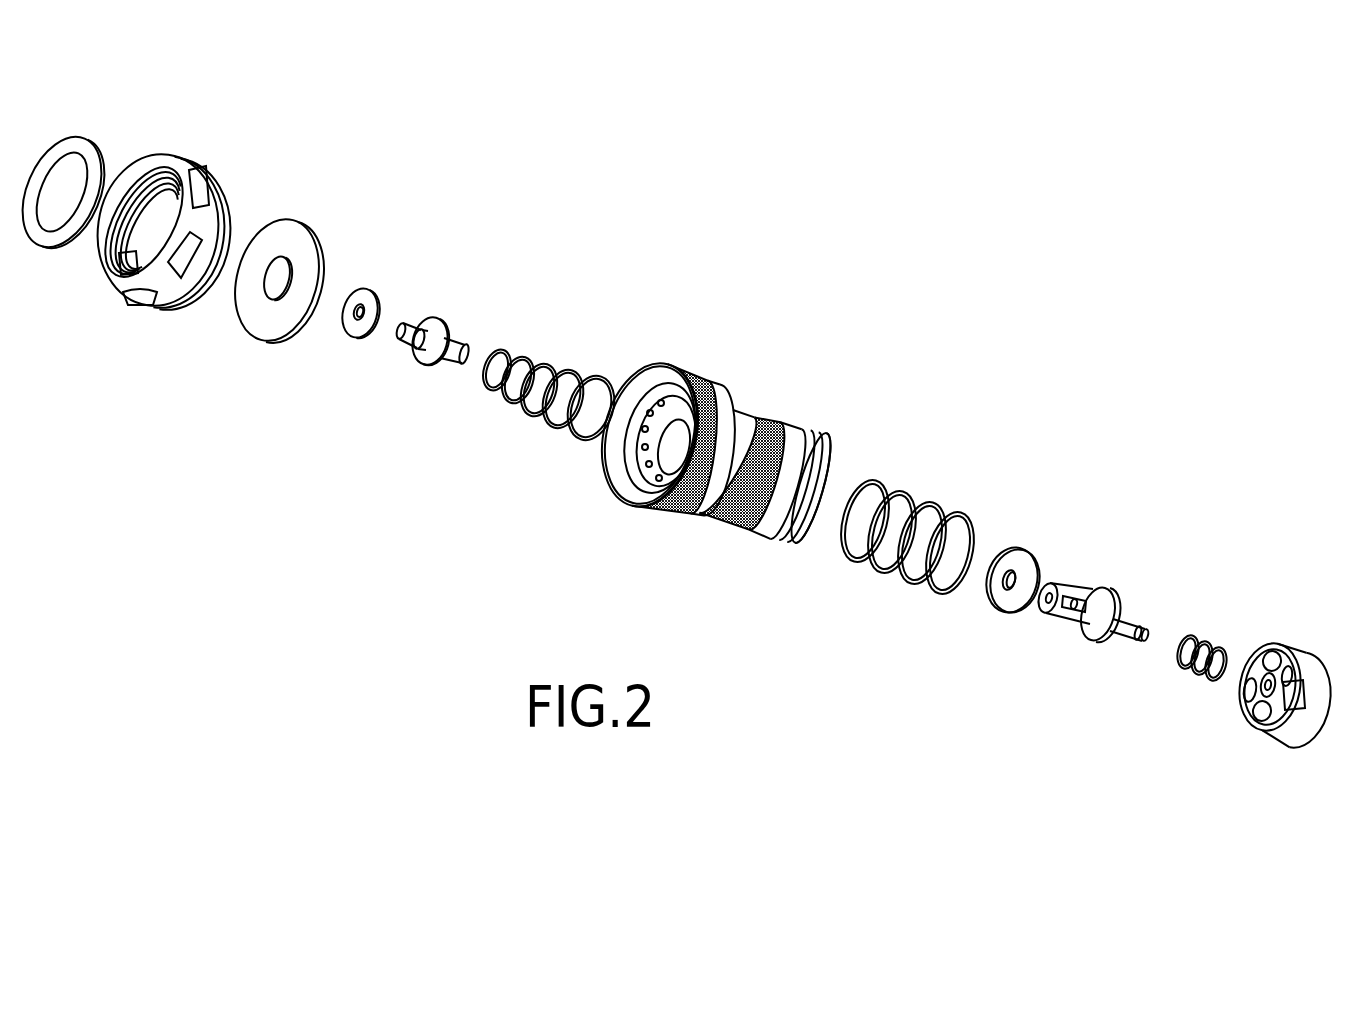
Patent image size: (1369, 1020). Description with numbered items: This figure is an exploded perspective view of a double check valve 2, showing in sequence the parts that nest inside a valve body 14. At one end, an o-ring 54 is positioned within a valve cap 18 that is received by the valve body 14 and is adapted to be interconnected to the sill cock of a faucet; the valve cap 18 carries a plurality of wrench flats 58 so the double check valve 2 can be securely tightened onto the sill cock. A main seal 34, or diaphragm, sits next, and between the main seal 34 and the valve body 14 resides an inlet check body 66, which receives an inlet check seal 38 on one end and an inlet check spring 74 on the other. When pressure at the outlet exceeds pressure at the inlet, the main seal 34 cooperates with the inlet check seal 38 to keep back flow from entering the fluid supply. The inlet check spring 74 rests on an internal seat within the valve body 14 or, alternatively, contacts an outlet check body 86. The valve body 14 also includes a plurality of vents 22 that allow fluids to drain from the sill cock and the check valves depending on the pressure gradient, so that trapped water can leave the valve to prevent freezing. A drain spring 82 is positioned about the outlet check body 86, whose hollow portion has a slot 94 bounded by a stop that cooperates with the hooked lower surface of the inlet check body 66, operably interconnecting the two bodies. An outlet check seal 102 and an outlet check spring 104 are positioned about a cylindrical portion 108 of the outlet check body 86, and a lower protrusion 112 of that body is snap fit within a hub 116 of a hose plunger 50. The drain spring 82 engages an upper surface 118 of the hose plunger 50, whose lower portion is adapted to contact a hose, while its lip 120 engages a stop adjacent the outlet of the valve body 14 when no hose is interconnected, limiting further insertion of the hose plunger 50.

The double check valve 2 is at (946, 260).
The valve body 14 is at (725, 406).
The valve cap 18 is at (180, 157).
The vents 22 is at (650, 370).
The main seal 34 is at (322, 259).
The inlet check seal 38 is at (353, 331).
The hose plunger 50 is at (1273, 729).
The o-ring 54 is at (86, 150).
The wrench flats 58 is at (203, 186).
The inlet check body 66 is at (449, 327).
The inlet check spring 74 is at (571, 368).
The drain spring 82 is at (932, 499).
The outlet check body 86 is at (1103, 644).
The slot 94 is at (1074, 597).
The outlet check seal 102 is at (998, 602).
The outlet check spring 104 is at (1210, 645).
The cylindrical portion 108 is at (1126, 618).
The lower protrusion 112 is at (1147, 633).
The hub 116 is at (1302, 630).
The upper surface 118 is at (1247, 721).
The lip 120 is at (1242, 692).